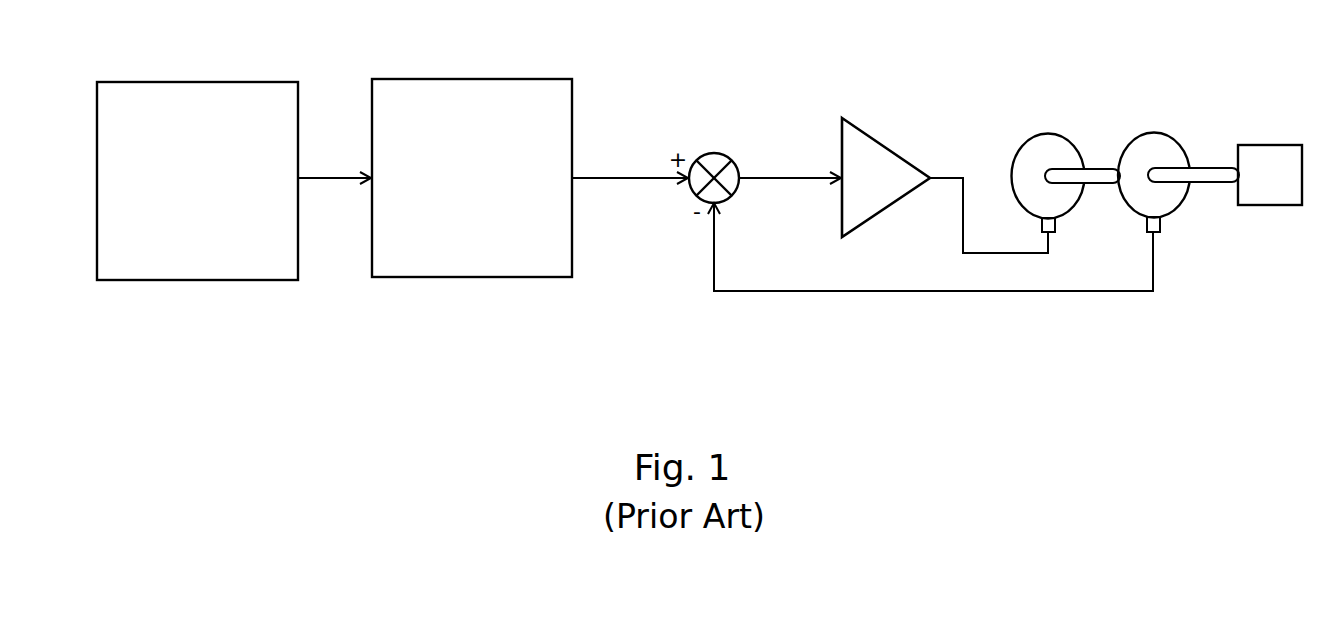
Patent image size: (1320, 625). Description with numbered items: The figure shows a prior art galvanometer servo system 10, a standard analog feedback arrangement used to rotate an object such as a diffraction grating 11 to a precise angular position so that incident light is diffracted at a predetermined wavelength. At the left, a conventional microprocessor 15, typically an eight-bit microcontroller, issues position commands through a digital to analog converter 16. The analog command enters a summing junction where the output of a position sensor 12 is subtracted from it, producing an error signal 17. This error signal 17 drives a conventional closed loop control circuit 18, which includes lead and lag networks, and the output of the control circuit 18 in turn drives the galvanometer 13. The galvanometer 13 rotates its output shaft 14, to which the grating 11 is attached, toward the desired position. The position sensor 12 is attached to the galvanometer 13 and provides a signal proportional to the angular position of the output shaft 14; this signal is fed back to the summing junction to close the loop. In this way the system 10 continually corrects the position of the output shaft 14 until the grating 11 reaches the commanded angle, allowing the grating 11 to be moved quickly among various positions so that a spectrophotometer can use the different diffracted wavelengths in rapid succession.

The prior art system 10 is at (235, 365).
The diffraction grating 11 is at (1275, 145).
The position sensor 12 is at (1163, 133).
The galvanometer 13 is at (1063, 133).
The output shaft 14 is at (1213, 168).
The microprocessor 15 is at (170, 81).
The digital to analog converter 16 is at (455, 78).
The error signal 17 is at (780, 177).
The closed loop control circuit 18 is at (880, 140).